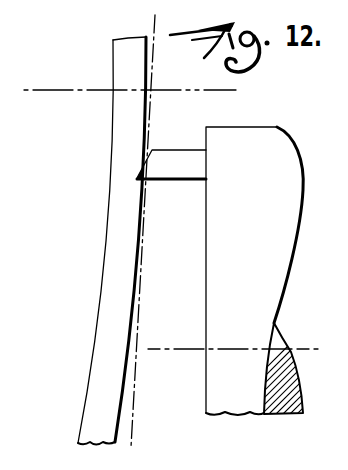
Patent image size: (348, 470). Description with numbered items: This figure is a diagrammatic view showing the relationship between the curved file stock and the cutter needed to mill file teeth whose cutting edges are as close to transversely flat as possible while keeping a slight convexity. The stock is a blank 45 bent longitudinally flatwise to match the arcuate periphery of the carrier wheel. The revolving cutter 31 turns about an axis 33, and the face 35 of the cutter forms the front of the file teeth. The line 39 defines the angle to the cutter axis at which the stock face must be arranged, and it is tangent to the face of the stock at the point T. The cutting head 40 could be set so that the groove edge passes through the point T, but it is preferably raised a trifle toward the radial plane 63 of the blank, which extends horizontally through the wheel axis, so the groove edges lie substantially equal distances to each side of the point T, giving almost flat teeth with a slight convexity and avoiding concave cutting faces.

The blank 45 is at (108, 231).
The line 39 is at (131, 418).
The radial plane 63 is at (38, 90).
The axis 33 is at (215, 349).
The cutting head 40 is at (274, 142).
The cutter 31 is at (173, 163).
The face of the cutter 35 is at (180, 180).
The point T is at (142, 172).